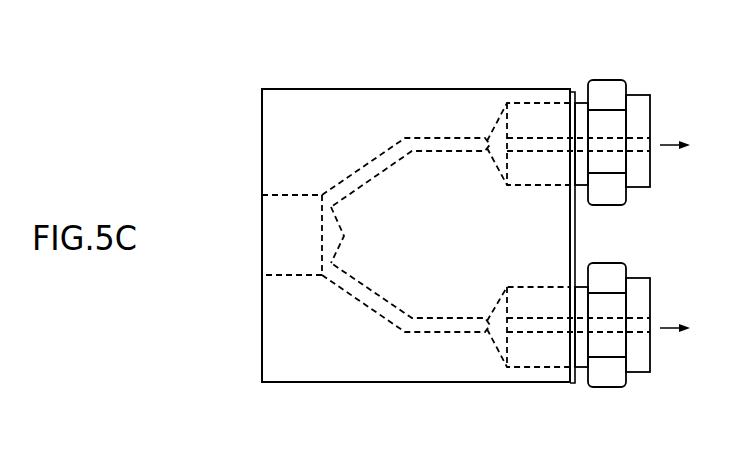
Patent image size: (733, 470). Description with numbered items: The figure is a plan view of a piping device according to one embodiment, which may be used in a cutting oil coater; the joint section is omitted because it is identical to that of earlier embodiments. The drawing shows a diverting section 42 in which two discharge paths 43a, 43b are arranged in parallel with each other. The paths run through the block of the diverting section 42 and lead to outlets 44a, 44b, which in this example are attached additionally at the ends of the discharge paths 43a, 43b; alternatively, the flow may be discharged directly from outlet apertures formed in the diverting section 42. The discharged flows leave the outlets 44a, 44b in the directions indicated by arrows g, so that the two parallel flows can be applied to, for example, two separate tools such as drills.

The diverting section 42 is at (262, 137).
The discharge path 43a is at (423, 138).
The discharge path 43b is at (433, 328).
The outlet 44a is at (605, 80).
The outlet 44b is at (603, 387).
The arrows indicating discharge directions g is at (665, 145).